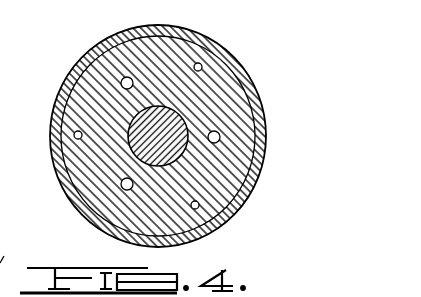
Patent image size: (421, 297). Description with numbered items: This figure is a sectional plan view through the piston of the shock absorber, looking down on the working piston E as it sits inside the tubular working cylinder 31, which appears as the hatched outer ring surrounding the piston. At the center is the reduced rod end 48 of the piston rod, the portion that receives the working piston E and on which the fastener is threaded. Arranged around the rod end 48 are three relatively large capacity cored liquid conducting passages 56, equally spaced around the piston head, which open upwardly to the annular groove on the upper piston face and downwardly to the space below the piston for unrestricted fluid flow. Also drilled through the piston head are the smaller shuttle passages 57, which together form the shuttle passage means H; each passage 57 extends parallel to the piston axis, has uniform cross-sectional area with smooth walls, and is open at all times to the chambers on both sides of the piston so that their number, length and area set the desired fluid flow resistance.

The tubular working cylinder 31 is at (69, 70).
The reduced rod end 48 is at (153, 104).
The cored liquid conducting passages 56 is at (128, 77).
The shuttle passages 57 is at (204, 69).
The working piston E is at (142, 129).
The shuttle passage means H is at (140, 136).